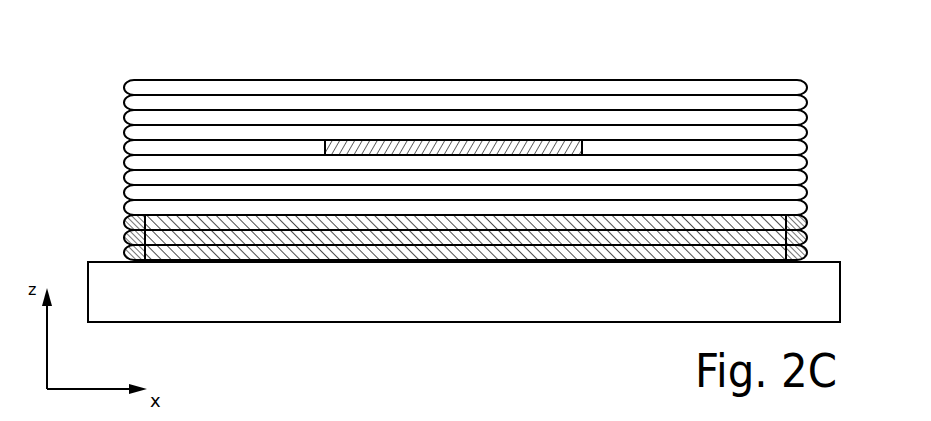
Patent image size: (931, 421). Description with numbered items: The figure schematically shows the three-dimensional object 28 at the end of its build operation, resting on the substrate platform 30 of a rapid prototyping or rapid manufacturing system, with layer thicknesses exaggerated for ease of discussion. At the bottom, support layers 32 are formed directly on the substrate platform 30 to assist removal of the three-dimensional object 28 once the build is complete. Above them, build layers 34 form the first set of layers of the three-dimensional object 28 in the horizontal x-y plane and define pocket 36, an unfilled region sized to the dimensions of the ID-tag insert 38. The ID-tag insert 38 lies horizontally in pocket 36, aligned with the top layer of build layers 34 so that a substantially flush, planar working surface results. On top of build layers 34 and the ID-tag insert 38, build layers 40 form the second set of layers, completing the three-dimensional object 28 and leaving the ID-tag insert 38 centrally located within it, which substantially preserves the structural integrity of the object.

The 3D object 28 is at (417, 142).
The substrate platform 30 is at (381, 308).
The support layers 32 is at (73, 215).
The build layers 34 is at (417, 130).
The pocket 36 is at (533, 128).
The ID-tag insert 38 is at (420, 142).
The build layers 40 is at (73, 80).